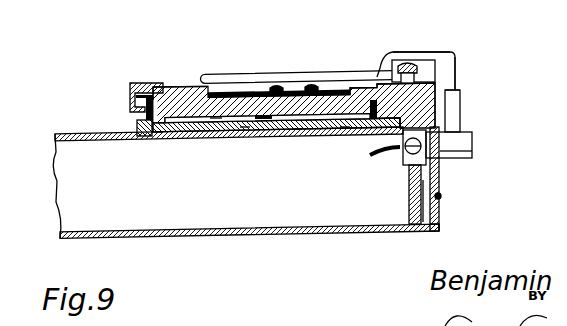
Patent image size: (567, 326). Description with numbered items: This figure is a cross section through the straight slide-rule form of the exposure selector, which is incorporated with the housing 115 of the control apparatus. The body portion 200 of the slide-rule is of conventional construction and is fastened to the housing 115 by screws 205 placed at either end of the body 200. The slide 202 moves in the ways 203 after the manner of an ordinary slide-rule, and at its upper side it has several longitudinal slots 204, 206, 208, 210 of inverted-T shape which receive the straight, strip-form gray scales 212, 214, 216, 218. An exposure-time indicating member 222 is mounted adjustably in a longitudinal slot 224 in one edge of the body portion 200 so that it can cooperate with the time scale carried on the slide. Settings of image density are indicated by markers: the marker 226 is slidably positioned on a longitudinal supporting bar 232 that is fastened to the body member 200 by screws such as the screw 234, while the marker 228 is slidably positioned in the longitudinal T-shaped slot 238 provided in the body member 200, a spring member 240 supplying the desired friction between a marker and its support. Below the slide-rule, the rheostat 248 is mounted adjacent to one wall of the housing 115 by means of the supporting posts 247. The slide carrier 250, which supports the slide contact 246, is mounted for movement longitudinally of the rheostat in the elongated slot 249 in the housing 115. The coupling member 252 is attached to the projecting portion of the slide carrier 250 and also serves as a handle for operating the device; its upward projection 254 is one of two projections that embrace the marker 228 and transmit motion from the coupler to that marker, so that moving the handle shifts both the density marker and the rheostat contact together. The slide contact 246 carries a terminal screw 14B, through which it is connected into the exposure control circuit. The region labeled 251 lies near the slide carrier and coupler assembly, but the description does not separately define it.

The housing 115 is at (437, 212).
The body portion 200 is at (160, 139).
The slide 202 is at (325, 128).
The ways 203 is at (168, 67).
The longitudinal slot 204 is at (215, 118).
The screws 205 is at (268, 128).
The longitudinal slot 206 is at (245, 127).
The longitudinal slot 208 is at (297, 130).
The longitudinal slot 210 is at (345, 128).
The gray scale 212 is at (213, 62).
The gray scale 214 is at (257, 91).
The gray scale 216 is at (278, 87).
The gray scale 218 is at (317, 87).
The exposure-time indicating member 222 is at (129, 93).
The longitudinal slot 224 is at (137, 138).
The marker 226 is at (410, 60).
The marker 228 is at (432, 51).
The supporting bar 232 is at (437, 60).
The screw 234 is at (435, 74).
The T-shaped slot 238 is at (371, 72).
The spring member 240 is at (360, 140).
The slide contact 246 is at (424, 172).
The supporting posts 247 is at (440, 196).
The rheostat 248 is at (428, 227).
The elongated slot 249 is at (472, 147).
The slide carrier 250 is at (440, 143).
The slot 251 is at (472, 151).
The coupling member 252 is at (460, 116).
The upward projection 254 is at (462, 100).
The terminal screw 14B is at (395, 163).